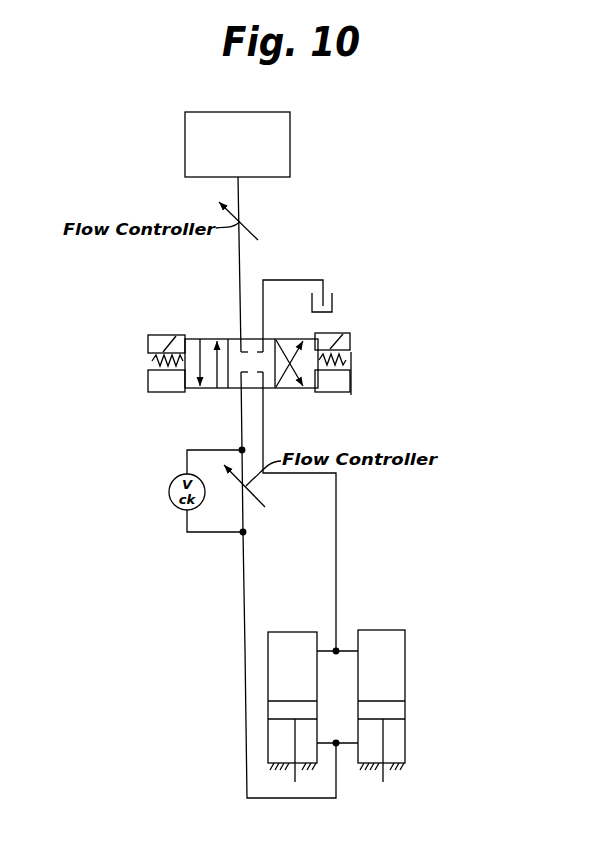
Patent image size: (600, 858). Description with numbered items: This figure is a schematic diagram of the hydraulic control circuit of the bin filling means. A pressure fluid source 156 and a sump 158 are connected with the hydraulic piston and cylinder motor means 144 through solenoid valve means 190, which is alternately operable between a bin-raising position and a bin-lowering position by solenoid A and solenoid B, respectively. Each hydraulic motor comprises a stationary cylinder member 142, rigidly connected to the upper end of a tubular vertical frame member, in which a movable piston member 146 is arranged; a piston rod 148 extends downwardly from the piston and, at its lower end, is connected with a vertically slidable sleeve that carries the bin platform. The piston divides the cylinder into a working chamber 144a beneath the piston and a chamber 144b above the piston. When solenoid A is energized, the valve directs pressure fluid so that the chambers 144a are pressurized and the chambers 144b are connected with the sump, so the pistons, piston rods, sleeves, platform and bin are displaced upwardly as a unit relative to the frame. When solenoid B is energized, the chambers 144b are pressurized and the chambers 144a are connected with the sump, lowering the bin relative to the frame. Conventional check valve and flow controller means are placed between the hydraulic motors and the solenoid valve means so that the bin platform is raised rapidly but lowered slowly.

The pressure fluid source 156 is at (290, 145).
The sump 158 is at (333, 297).
The solenoid valve means 190 is at (298, 396).
The hydraulic piston and cylinder motor means 144 is at (338, 690).
The stationary cylinder member 142 is at (268, 689).
The chamber above the piston 144b is at (276, 655).
The movable piston member 146 is at (272, 712).
The piston rod 148 is at (295, 746).
The working chamber beneath the piston 144a is at (281, 758).